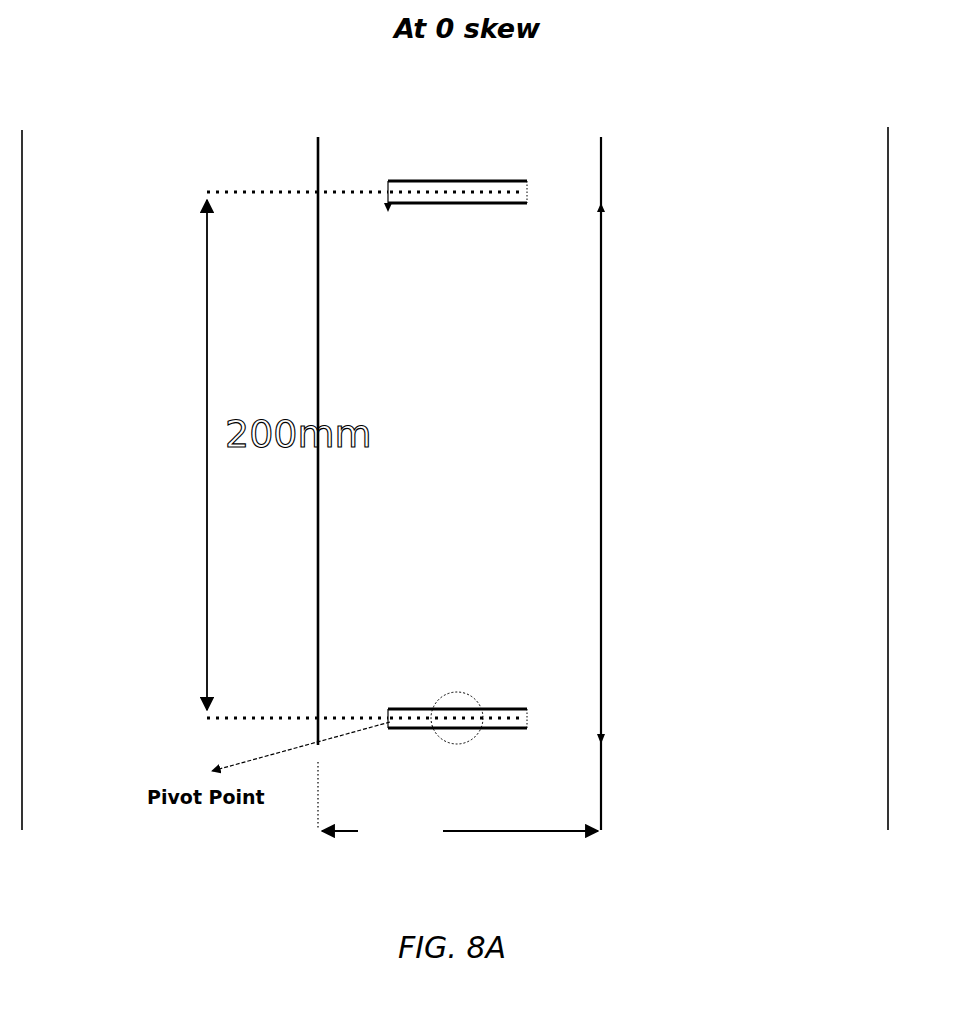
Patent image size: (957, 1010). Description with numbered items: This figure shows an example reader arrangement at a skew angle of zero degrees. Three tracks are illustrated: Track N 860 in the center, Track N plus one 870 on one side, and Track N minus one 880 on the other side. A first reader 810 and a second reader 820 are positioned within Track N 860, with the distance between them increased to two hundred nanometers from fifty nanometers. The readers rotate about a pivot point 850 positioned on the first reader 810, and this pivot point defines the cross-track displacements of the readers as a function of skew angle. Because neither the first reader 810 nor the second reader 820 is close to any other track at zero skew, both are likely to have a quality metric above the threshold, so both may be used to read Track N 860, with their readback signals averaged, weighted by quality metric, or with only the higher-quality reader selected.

The Track N-1 880 is at (184, 100).
The Track N 860 is at (430, 102).
The Track N+1 870 is at (741, 103).
The second reader 820 is at (448, 207).
The first reader 810 is at (450, 667).
The pivot point 850 is at (455, 723).